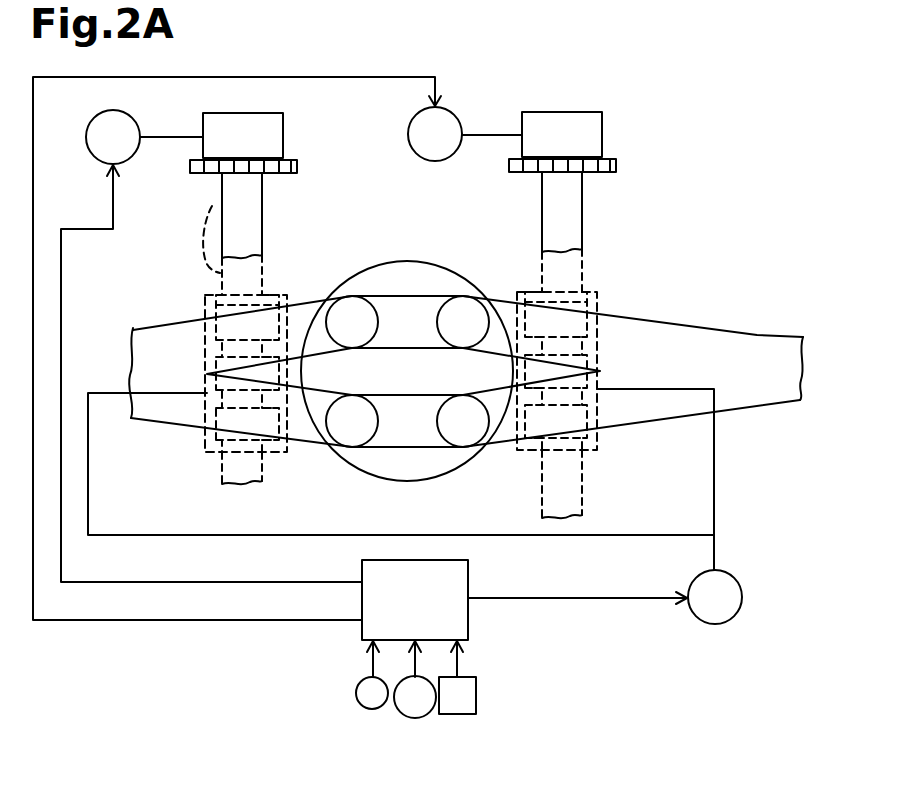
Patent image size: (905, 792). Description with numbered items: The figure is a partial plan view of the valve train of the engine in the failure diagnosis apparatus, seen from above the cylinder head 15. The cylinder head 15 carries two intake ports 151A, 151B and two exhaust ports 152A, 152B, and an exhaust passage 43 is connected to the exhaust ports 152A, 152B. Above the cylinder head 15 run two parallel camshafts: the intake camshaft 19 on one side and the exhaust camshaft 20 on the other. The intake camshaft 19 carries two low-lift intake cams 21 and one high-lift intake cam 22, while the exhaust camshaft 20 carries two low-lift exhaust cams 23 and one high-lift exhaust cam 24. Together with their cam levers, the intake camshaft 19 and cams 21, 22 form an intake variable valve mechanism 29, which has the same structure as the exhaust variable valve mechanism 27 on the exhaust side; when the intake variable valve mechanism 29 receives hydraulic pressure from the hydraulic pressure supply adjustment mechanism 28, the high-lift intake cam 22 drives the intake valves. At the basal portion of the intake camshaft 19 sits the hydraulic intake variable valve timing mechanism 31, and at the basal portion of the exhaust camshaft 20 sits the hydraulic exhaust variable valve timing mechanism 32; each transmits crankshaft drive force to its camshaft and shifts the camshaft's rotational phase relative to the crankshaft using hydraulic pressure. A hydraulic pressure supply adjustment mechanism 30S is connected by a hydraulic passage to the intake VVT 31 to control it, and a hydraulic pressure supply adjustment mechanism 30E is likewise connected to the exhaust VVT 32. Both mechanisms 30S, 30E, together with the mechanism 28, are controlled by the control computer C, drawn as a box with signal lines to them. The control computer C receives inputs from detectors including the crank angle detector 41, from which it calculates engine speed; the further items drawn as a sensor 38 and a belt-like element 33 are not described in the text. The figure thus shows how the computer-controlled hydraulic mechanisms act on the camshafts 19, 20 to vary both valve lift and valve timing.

The control computer C is at (463, 572).
The cylinder head 15 is at (407, 261).
The intake port 151A is at (353, 433).
The intake port 151B is at (362, 334).
The exhaust port 152A is at (453, 432).
The exhaust port 152B is at (452, 310).
The intake camshaft 19 is at (222, 202).
The exhaust camshaft 20 is at (583, 275).
The low-lift intake cam 21 is at (270, 292).
The high-lift intake cam 22 is at (290, 303).
The low-lift exhaust cam 23 is at (511, 284).
The high-lift exhaust cam 24 is at (612, 356).
The exhaust variable valve mechanism 27 is at (583, 455).
The hydraulic pressure supply adjustment mechanism 28 is at (715, 625).
The intake variable valve mechanism 29 is at (212, 457).
The hydraulic pressure supply adjustment mechanism 30S is at (124, 118).
The hydraulic pressure supply adjustment mechanism 30E is at (411, 140).
The intake variable valve timing mechanism 31 is at (272, 139).
The exhaust variable valve timing mechanism 32 is at (590, 138).
The left belt 33 is at (152, 327).
The sensor 38 is at (357, 690).
The crank angle detector 41 is at (412, 713).
The exhaust passage 43 is at (771, 402).